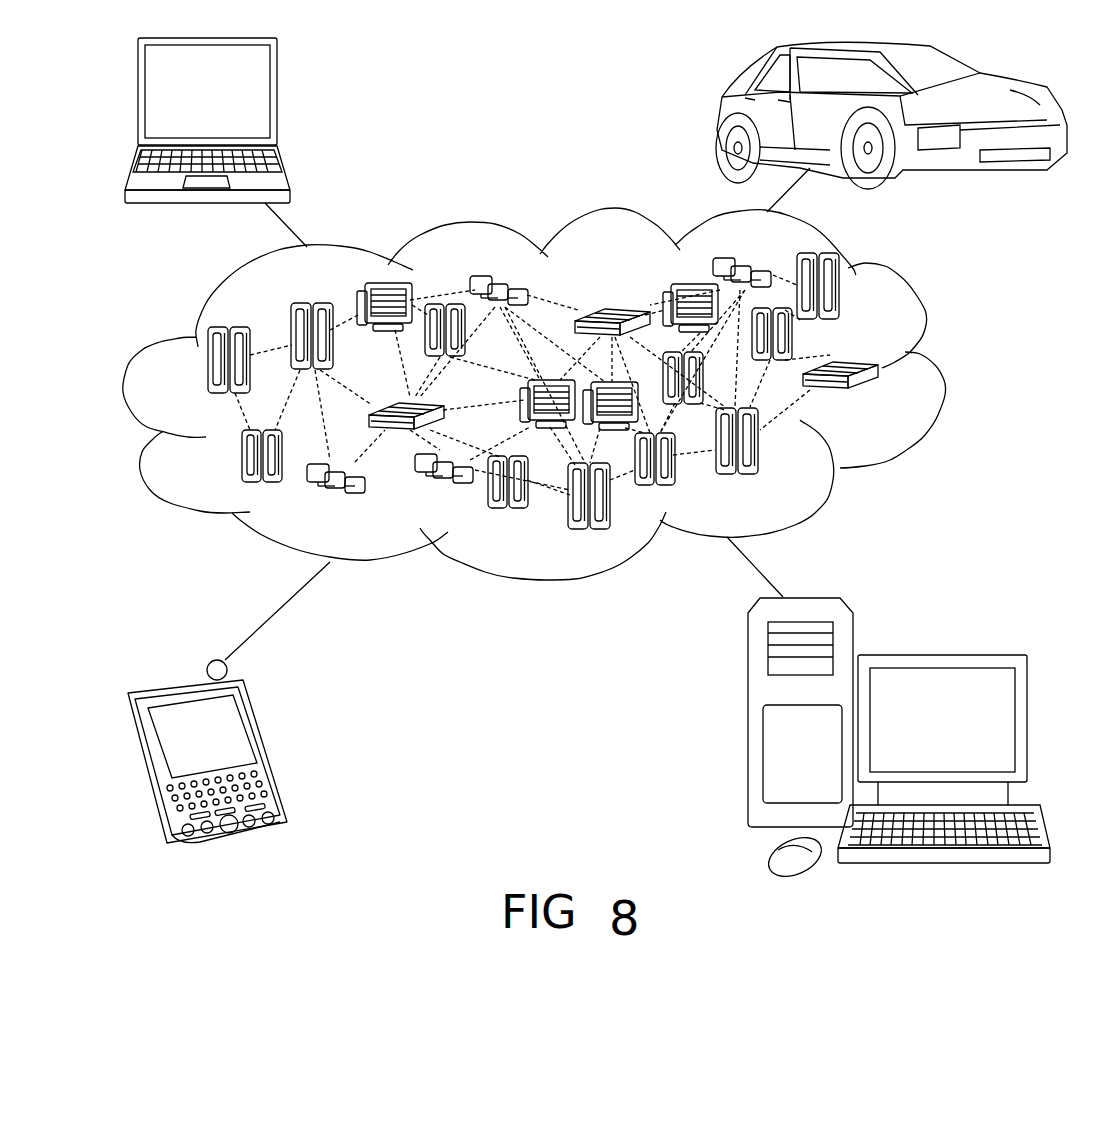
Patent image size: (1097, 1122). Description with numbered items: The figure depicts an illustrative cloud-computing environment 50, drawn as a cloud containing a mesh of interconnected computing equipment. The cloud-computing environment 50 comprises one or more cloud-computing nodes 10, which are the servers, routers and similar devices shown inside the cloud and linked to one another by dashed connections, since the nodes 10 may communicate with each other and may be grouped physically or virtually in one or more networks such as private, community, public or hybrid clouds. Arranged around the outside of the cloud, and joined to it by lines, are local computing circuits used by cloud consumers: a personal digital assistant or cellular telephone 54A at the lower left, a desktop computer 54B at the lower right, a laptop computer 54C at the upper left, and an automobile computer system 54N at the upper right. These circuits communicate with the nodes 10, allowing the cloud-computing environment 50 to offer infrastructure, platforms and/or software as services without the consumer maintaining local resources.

The cloud-computing node 10 is at (880, 398).
The cloud-computing environment 50 is at (937, 370).
The personal digital assistant or cellular telephone 54A is at (267, 750).
The desktop computer 54B is at (940, 655).
The laptop computer 54C is at (278, 100).
The automobile computer system 54N is at (720, 118).